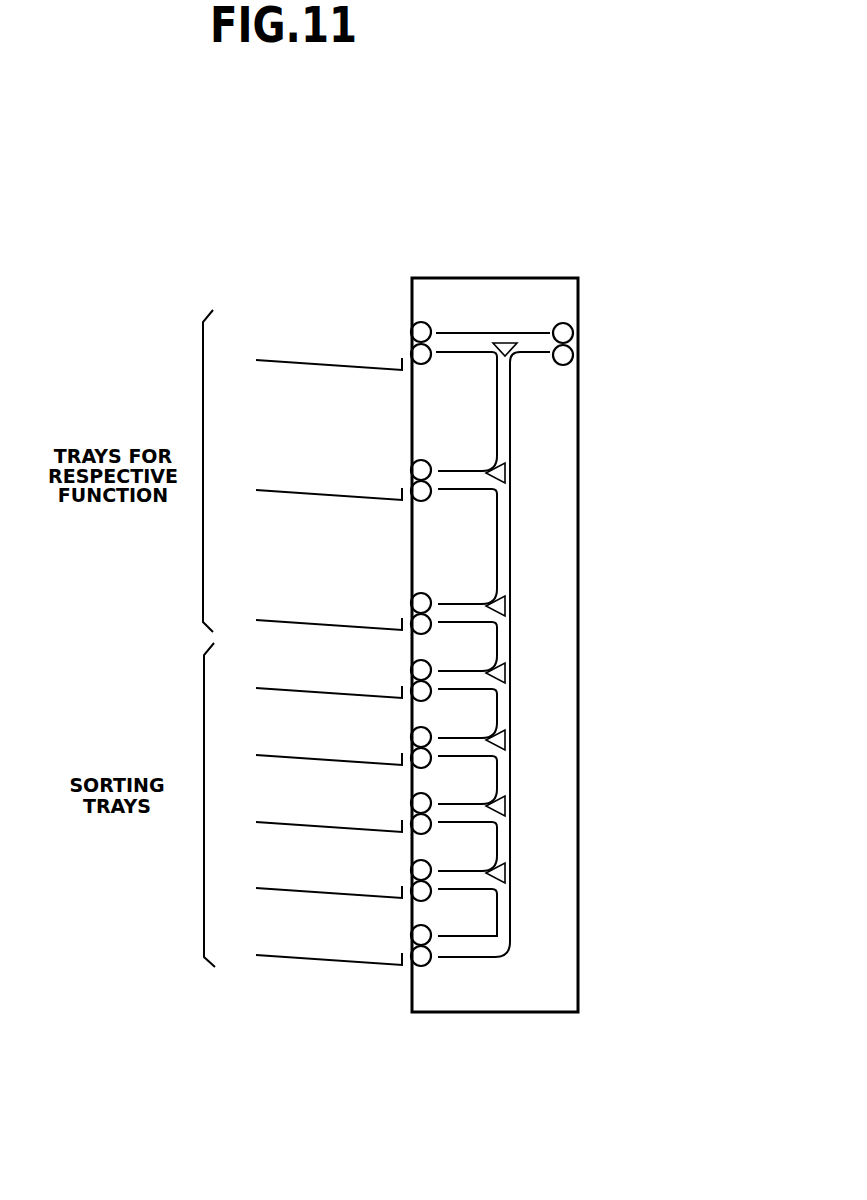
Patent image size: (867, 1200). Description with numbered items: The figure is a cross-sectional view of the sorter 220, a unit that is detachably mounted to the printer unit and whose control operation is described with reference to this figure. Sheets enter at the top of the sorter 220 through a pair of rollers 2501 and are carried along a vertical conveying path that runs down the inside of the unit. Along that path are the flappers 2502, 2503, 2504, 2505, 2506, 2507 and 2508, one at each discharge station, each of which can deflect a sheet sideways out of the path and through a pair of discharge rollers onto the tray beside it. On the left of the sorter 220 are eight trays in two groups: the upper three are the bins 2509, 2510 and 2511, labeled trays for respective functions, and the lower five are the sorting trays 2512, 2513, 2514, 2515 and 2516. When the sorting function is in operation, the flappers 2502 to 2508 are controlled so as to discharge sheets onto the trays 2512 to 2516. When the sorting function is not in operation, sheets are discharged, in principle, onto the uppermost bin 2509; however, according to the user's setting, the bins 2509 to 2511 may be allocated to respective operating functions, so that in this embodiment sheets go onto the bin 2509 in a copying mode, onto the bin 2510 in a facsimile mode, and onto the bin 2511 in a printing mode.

The sorter 220 is at (513, 278).
The conveying rollers 2501 is at (573, 334).
The flapper 2502 is at (516, 354).
The flapper 2503 is at (508, 473).
The flapper 2504 is at (508, 606).
The flapper 2505 is at (508, 673).
The flapper 2506 is at (508, 745).
The flapper 2507 is at (508, 811).
The flapper 2508 is at (508, 877).
The uppermost bin 2509 is at (279, 362).
The bin 2510 is at (279, 492).
The bin 2511 is at (279, 622).
The tray 2512 is at (279, 690).
The tray 2513 is at (279, 757).
The tray 2514 is at (279, 824).
The tray 2515 is at (279, 890).
The tray 2516 is at (279, 957).